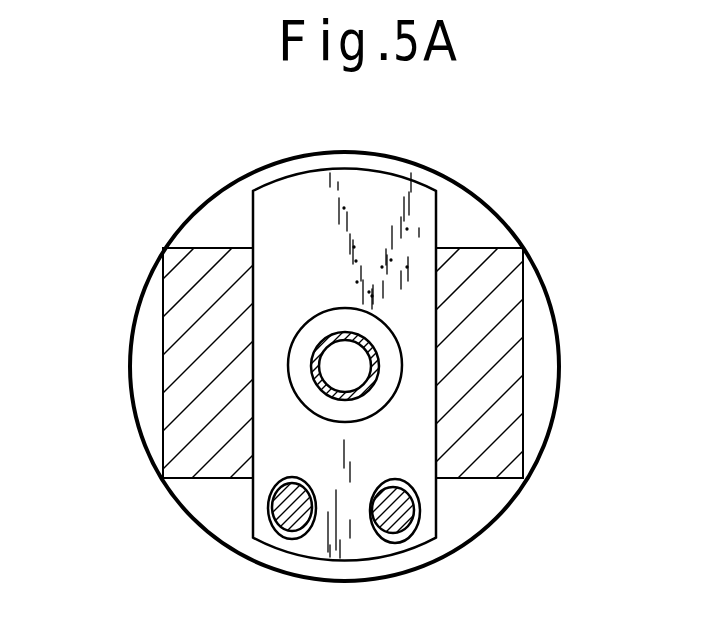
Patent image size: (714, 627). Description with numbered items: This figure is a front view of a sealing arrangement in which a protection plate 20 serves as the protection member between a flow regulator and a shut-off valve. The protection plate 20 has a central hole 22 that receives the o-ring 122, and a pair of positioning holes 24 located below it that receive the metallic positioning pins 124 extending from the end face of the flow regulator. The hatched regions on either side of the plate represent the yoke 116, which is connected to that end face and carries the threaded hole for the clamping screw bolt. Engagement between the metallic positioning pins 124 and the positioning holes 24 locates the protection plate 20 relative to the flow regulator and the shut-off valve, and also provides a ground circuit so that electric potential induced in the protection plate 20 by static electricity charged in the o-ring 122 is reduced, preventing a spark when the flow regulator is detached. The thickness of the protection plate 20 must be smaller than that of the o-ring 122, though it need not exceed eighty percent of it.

The protection plate 20 is at (430, 200).
The central hole 22 is at (310, 322).
The o-ring 122 is at (387, 383).
The positioning holes 24 is at (288, 479).
The positioning pins 124 is at (273, 527).
The yoke 116 is at (178, 400).